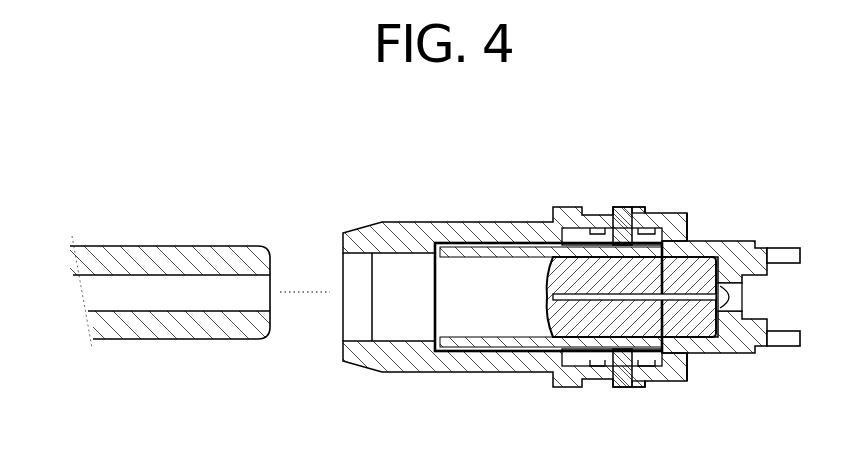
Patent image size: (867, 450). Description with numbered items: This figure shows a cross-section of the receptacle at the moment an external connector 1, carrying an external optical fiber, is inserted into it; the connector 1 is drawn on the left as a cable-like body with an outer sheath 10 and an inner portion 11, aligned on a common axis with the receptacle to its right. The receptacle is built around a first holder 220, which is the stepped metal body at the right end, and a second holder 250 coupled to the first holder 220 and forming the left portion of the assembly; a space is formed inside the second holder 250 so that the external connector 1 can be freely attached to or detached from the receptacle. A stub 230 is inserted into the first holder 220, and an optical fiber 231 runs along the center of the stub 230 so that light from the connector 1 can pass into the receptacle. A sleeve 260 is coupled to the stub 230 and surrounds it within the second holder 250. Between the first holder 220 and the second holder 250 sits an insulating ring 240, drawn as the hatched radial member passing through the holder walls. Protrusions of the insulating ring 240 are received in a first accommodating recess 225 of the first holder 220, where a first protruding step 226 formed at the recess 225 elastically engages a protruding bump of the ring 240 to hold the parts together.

The external connector 1 is at (210, 212).
The outer sheath of cable 10 is at (157, 263).
The inner conductor of cable 11 is at (163, 302).
The second holder 250 is at (472, 205).
The insulating ring 240 is at (618, 196).
The first protruding step 226 is at (657, 218).
The first accommodating recess 225 is at (658, 220).
The first holder 220 is at (745, 215).
The sleeve 260 is at (470, 352).
The optical fiber 231 is at (580, 302).
The stub 230 is at (663, 322).